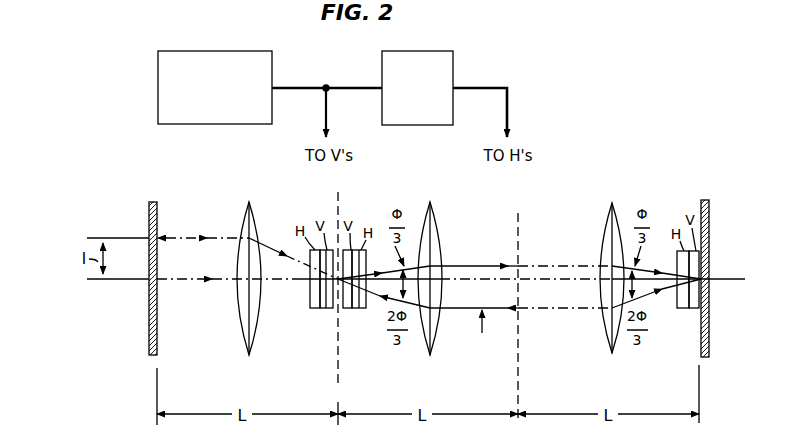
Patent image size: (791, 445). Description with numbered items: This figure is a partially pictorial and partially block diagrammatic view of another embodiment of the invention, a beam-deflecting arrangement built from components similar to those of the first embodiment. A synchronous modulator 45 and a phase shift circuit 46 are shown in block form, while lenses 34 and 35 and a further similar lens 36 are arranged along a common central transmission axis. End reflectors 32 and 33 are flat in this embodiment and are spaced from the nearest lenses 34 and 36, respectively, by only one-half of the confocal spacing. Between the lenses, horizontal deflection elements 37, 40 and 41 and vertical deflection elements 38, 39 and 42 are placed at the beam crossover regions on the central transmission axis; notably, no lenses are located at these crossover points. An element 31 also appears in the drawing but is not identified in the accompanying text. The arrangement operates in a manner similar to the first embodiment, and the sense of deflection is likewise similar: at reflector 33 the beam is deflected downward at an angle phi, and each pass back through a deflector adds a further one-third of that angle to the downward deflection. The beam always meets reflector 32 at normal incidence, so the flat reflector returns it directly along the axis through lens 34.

The incident light beam 31 is at (151, 282).
The end reflector 32 is at (157, 204).
The end reflector 33 is at (709, 341).
The lens 34 is at (262, 335).
The lens 35 is at (442, 335).
The lens 36 is at (607, 334).
The horizontal deflection element 37 is at (312, 296).
The vertical deflection element 38 is at (327, 309).
The vertical deflection element 39 is at (348, 309).
The horizontal deflection element 40 is at (360, 309).
The horizontal deflection element 41 is at (680, 309).
The vertical deflection element 42 is at (693, 309).
The synchronous modulator 45 is at (158, 82).
The phase shift circuit 46 is at (452, 62).